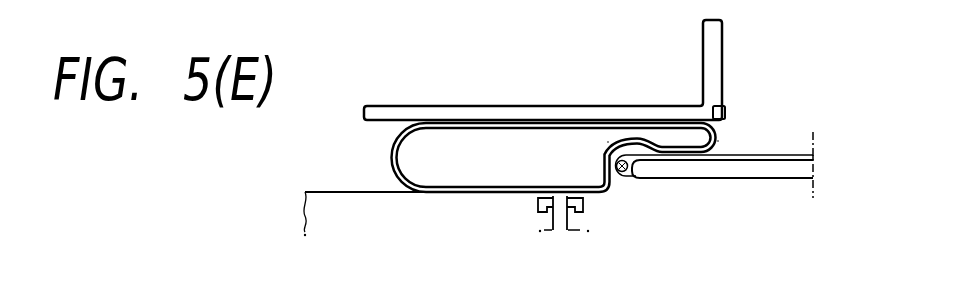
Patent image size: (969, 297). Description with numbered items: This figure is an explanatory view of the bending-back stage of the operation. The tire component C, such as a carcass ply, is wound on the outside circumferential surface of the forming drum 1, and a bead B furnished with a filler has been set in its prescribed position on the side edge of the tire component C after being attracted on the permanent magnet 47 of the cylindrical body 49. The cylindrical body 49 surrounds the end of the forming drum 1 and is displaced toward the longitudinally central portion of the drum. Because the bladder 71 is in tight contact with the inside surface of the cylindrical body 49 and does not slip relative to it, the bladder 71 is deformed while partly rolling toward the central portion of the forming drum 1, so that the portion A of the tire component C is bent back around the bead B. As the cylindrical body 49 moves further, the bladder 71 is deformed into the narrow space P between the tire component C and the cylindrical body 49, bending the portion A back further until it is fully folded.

The forming drum 1 is at (721, 180).
The permanent magnet 47 is at (727, 113).
The cylindrical body 49 is at (589, 104).
The bladder 71 is at (522, 186).
The portion of the tire component A is at (608, 142).
The bead B is at (622, 183).
The tire component C is at (768, 153).
The narrow space P is at (719, 141).